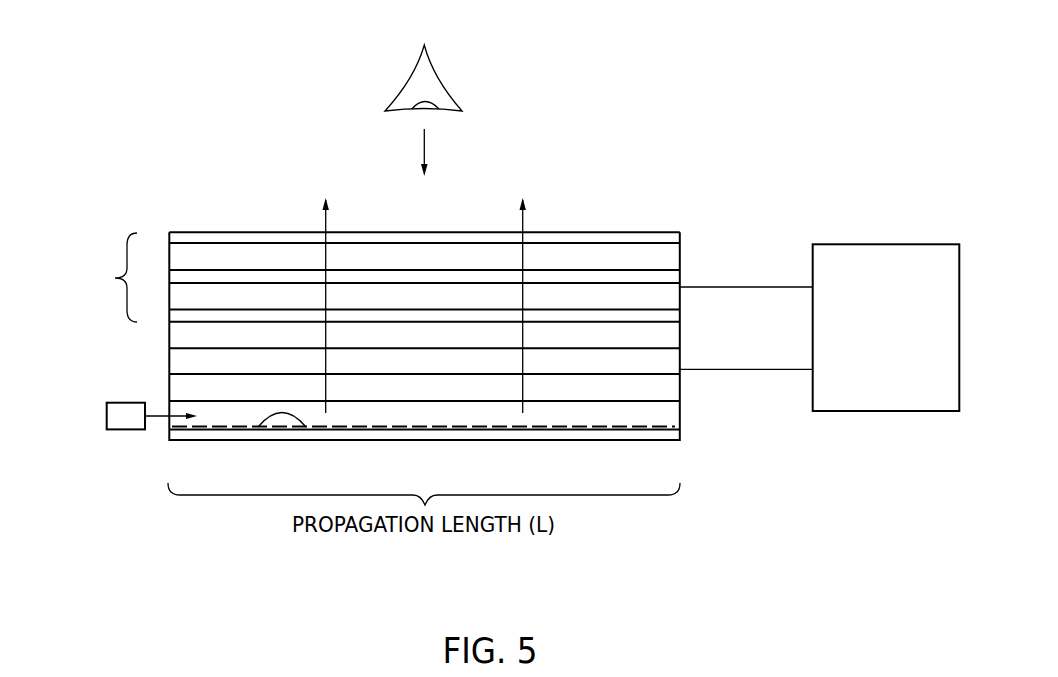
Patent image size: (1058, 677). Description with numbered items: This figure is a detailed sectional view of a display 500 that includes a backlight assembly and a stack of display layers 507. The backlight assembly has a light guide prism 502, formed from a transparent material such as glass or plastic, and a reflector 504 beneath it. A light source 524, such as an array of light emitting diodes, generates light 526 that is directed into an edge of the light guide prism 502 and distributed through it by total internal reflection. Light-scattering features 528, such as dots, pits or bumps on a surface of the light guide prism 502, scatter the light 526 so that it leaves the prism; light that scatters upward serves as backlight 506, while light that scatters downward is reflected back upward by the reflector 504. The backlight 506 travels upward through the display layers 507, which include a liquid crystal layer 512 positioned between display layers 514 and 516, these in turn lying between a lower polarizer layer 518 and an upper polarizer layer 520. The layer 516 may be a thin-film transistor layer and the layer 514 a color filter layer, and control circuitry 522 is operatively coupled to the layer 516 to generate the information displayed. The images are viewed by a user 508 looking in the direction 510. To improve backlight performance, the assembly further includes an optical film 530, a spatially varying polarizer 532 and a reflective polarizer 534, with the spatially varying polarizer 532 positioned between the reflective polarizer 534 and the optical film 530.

The display 500 is at (790, 113).
The light guide prism 502 is at (680, 412).
The reflector 504 is at (680, 435).
The backlight 506 is at (325, 218).
The display layers 507 is at (105, 277).
The user 508 is at (430, 78).
The direction 510 is at (427, 145).
The liquid crystal layer 512 is at (680, 275).
The display layer 514 is at (680, 257).
The display layer 516 is at (680, 296).
The lower polarizer layer 518 is at (680, 313).
The upper polarizer layer 520 is at (637, 232).
The control circuitry 522 is at (888, 244).
The light source 524 is at (106, 410).
The light 526 is at (160, 418).
The light-scattering features 528 is at (260, 428).
The optical film 530 is at (169, 388).
The spatially varying polarizer 532 is at (169, 363).
The reflective polarizer 534 is at (680, 332).